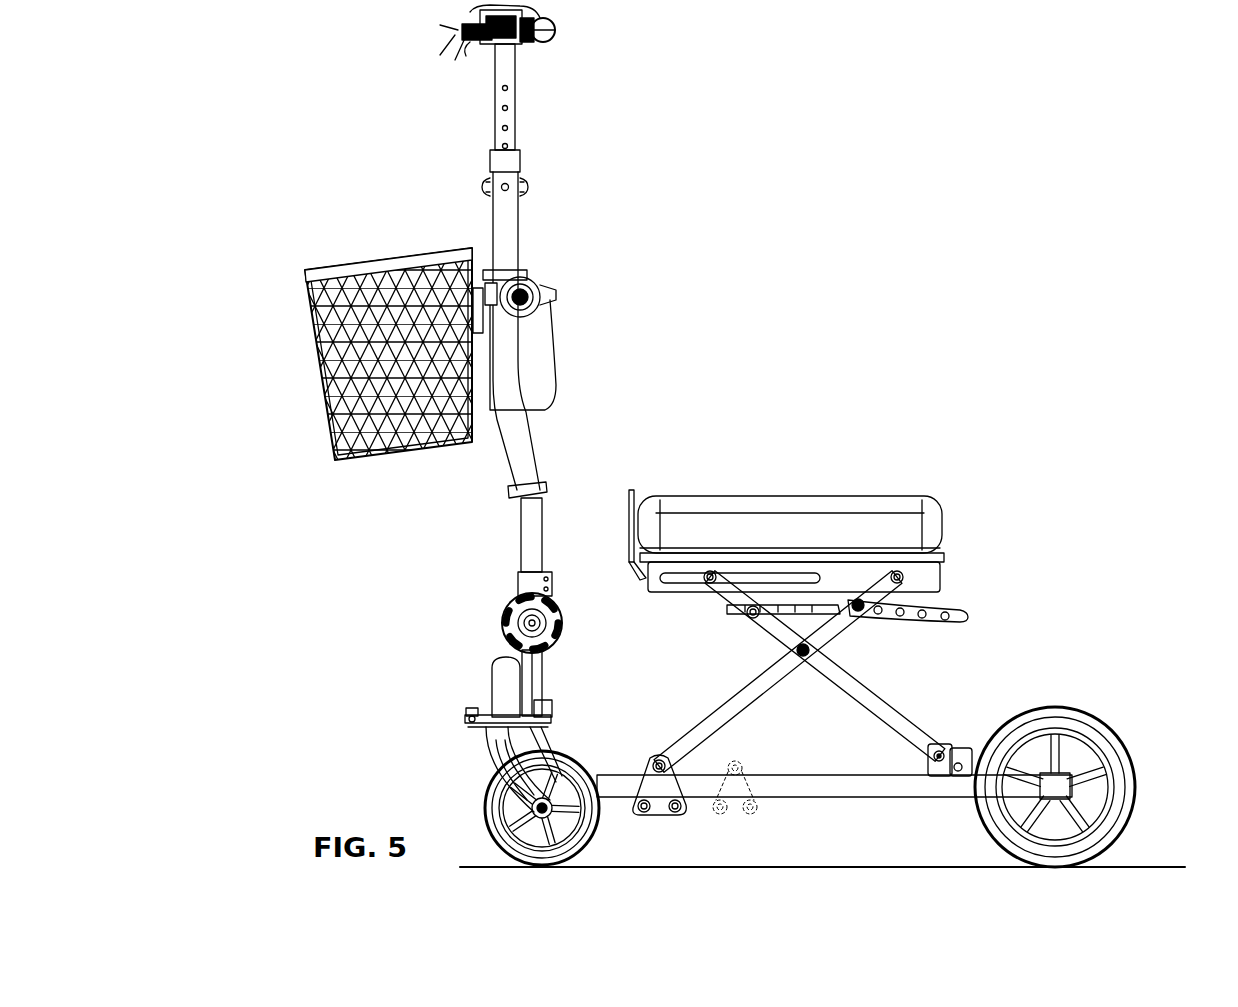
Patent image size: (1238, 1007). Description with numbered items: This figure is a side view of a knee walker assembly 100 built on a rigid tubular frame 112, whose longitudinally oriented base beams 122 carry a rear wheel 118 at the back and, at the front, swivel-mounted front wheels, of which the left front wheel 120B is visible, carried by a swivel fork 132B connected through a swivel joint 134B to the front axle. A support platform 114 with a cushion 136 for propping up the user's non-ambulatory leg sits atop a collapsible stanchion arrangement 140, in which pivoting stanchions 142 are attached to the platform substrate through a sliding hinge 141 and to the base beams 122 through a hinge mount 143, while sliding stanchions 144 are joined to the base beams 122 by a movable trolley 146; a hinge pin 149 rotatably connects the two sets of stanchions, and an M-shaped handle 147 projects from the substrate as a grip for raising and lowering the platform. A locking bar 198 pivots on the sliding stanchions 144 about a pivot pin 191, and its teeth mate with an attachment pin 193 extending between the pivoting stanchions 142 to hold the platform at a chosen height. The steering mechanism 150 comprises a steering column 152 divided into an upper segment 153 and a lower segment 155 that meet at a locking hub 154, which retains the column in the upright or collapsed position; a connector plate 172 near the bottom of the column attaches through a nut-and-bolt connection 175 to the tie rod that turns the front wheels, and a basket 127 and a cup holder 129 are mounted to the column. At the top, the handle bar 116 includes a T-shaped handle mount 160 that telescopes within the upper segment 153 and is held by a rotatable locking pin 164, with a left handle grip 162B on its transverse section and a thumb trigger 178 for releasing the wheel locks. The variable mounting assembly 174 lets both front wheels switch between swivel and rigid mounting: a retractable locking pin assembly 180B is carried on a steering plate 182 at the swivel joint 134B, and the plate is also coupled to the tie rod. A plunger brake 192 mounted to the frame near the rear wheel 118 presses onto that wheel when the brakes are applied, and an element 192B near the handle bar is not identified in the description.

The knee walker assembly 100 is at (1092, 96).
The frame 112 is at (870, 760).
The support platform 114 is at (818, 517).
The handle bar 116 is at (552, 48).
The rear wheel 118 is at (1098, 720).
The left front wheel 120B is at (487, 805).
The base beams 122 is at (818, 800).
The basket 127 is at (305, 335).
The cup holder 129 is at (558, 350).
The swivel fork 132B is at (486, 752).
The swivel joint 134B is at (516, 734).
The cushion 136 is at (800, 496).
The collapsible stanchion arrangement 140 is at (880, 672).
The sliding hinge 141 is at (695, 603).
The pivoting stanchions 142 is at (892, 708).
The hinge mount 143 is at (922, 770).
The sliding stanchions 144 is at (735, 698).
The movable trolley 146 is at (672, 818).
The M-shaped handle 147 is at (630, 527).
The hinge pin 149 is at (802, 661).
The steering mechanism 150 is at (333, 143).
The steering column 152 is at (522, 248).
The upper segment 153 is at (520, 535).
The locking hub 154 is at (507, 603).
The lower segment 155 is at (541, 670).
The handle mount 160 is at (515, 112).
The left handle grip 162B is at (552, 37).
The locking pin 164 is at (524, 180).
The connector plate 172 is at (486, 710).
The variable mounting assembly 174 is at (557, 705).
The nut-and-bolt connection 175 is at (470, 712).
The thumb trigger 178 is at (470, 18).
The retractable locking pin assembly 180B is at (543, 680).
The steering plate 182 is at (482, 732).
The pivot pin 191 is at (862, 598).
The plunger brake 192 is at (977, 748).
The brake cable 192B is at (478, 52).
The attachment pin 193 is at (752, 606).
The locking bar 198 is at (962, 603).